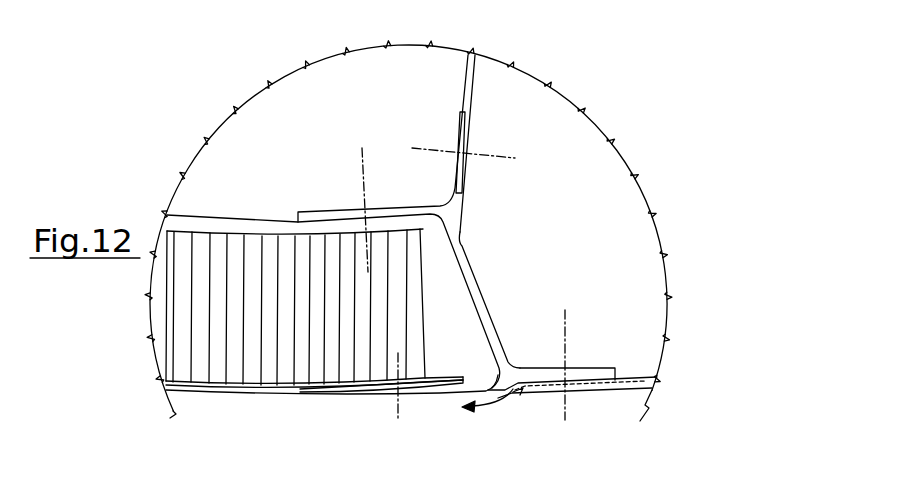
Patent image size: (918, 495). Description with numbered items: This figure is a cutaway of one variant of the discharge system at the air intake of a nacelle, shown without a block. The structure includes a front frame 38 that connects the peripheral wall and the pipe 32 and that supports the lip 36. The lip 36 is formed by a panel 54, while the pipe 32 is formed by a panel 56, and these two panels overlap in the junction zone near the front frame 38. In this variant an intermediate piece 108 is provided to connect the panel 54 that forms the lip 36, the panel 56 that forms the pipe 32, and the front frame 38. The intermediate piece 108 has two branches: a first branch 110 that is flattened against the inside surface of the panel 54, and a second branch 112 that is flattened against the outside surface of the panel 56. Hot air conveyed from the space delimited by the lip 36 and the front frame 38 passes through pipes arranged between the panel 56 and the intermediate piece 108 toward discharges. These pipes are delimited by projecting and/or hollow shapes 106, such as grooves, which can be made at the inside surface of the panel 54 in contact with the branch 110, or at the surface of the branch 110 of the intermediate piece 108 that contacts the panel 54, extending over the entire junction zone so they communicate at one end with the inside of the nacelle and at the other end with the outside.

The pipe 32 is at (200, 390).
The lip 36 is at (648, 389).
The front frame 38 is at (475, 77).
The panel 54 is at (602, 391).
The panel 56 is at (290, 390).
The projecting and/or hollow shapes 106 is at (627, 382).
The intermediate piece 108 is at (487, 317).
The first branch 110 is at (588, 373).
The second branch 112 is at (455, 392).